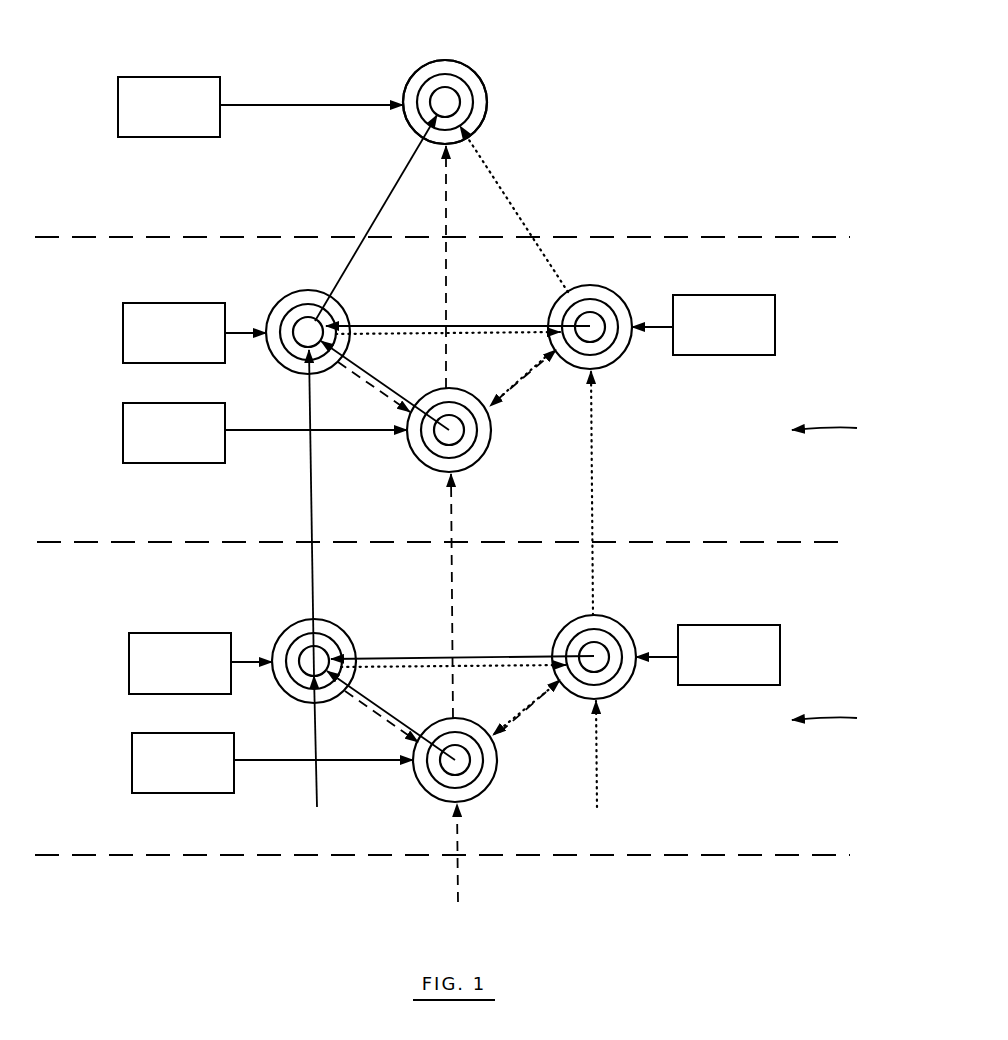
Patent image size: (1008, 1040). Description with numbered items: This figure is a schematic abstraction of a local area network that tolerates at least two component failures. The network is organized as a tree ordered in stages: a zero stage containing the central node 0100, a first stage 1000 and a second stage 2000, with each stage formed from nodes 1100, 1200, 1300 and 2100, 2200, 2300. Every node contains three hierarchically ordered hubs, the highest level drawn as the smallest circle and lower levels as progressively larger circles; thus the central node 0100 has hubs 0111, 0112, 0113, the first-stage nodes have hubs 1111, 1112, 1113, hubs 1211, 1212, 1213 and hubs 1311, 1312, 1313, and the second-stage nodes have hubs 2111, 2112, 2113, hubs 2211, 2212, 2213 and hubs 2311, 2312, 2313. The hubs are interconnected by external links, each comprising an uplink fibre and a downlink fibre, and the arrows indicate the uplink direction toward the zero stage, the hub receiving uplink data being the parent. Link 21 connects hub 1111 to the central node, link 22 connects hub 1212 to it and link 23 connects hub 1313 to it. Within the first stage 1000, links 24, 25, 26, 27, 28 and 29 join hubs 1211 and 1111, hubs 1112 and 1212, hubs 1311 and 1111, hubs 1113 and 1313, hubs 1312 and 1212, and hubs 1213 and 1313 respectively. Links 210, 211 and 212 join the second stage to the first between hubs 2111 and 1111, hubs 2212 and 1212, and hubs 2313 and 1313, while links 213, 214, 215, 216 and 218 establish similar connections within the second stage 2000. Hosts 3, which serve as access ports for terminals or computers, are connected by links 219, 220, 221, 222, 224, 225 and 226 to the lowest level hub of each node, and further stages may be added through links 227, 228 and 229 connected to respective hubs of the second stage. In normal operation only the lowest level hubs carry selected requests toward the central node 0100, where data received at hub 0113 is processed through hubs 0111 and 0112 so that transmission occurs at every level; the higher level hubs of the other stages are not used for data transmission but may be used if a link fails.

The host 3 is at (186, 78).
The central node 0100 is at (447, 74).
The highest level hub of central node 0111 is at (448, 88).
The second level hub of central node 0112 is at (433, 75).
The lowest level hub of central node 0113 is at (402, 63).
The link 21 is at (385, 200).
The link 22 is at (510, 204).
The link 23 is at (449, 230).
The link 24 is at (490, 322).
The link 25 is at (462, 345).
The link 26 is at (384, 380).
The link 27 is at (378, 388).
The link 28 is at (516, 386).
The link 29 is at (528, 380).
The first stage 1000 is at (850, 425).
The first node of first stage 1100 is at (311, 313).
The hub 1111 is at (323, 328).
The hub 1112 is at (330, 314).
The hub 1113 is at (334, 300).
The second node of first stage 1200 is at (641, 334).
The hub 1211 is at (606, 322).
The hub 1212 is at (610, 280).
The hub 1213 is at (578, 257).
The third node of first stage 1300 is at (450, 444).
The hub 1311 is at (464, 428).
The hub 1312 is at (478, 440).
The hub 1313 is at (490, 450).
The link 210 is at (306, 512).
The link 211 is at (598, 503).
The link 212 is at (455, 566).
The link 213 is at (488, 652).
The link 214 is at (464, 676).
The link 215 is at (380, 712).
The link 216 is at (390, 724).
The link 218 is at (540, 722).
The link 219 is at (245, 335).
The link 220 is at (255, 432).
The link 221 is at (248, 665).
The link 222 is at (292, 759).
The link 224 is at (664, 660).
The link 225 is at (658, 330).
The link 226 is at (276, 105).
The link 227 is at (312, 790).
The link 228 is at (606, 790).
The link 229 is at (462, 882).
The second stage 2000 is at (850, 717).
The first node of second stage 2100 is at (280, 632).
The hub 2111 is at (328, 655).
The hub 2112 is at (335, 642).
The hub 2113 is at (322, 626).
The second node of second stage 2200 is at (633, 657).
The hub 2211 is at (607, 649).
The hub 2212 is at (615, 640).
The hub 2213 is at (600, 616).
The third node of second stage 2300 is at (452, 777).
The hub 2311 is at (470, 758).
The hub 2312 is at (483, 768).
The hub 2313 is at (495, 782).